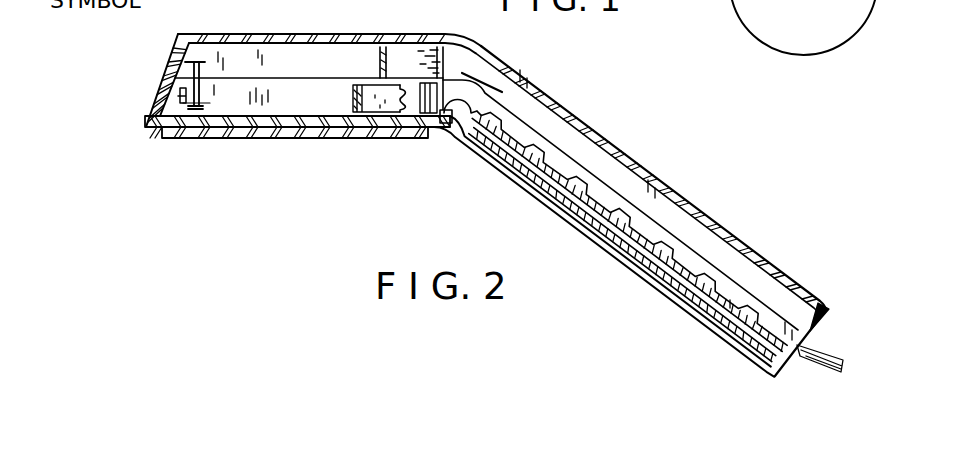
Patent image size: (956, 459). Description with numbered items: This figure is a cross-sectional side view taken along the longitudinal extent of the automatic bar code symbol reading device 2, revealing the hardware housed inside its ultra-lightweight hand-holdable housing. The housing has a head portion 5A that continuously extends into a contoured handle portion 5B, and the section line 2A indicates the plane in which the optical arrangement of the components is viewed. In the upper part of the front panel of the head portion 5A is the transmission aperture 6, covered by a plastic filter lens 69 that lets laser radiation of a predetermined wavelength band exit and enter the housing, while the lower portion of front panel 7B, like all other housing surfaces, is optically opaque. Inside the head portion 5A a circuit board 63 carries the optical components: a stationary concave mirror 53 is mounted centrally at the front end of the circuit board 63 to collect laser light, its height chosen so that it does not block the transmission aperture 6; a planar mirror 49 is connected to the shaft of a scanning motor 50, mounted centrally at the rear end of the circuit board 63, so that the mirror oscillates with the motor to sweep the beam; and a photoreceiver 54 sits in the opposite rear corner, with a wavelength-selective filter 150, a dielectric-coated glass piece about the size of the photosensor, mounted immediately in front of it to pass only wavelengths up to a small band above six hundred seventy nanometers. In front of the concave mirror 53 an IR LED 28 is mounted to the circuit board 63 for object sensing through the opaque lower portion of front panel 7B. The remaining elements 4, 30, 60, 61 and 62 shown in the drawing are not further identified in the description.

The automatic bar code symbol reading device 2 is at (612, 105).
The exit window tip 4 is at (820, 372).
The transmission aperture 6 is at (163, 48).
The IR LED 28 is at (181, 128).
The bracket 30 is at (157, 90).
The planar mirror 49 is at (387, 58).
The scanning motor 50 is at (445, 80).
The stationary concave mirror 53 is at (201, 96).
The photoreceiver 54 is at (368, 100).
The lower wall 60 is at (711, 328).
The upper ribbed strip 61 is at (548, 190).
The lower ribbed strip 62 is at (683, 310).
The circuit board 63 is at (256, 110).
The plastic filter lens 69 is at (168, 63).
The wavelength-selective filter 150 is at (353, 92).
The head portion 5A is at (283, 33).
The contoured handle portion 5B is at (668, 180).
The lower portion of front panel 7B is at (148, 116).
The section line 2A is at (122, 76).